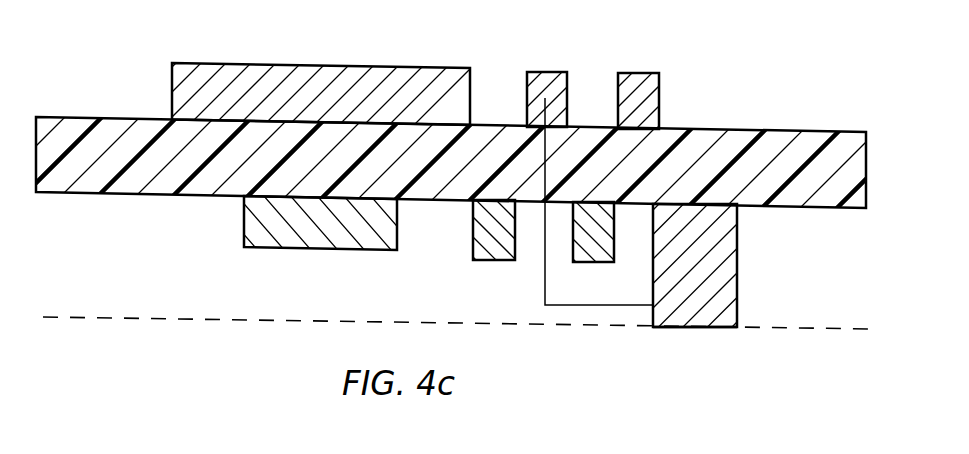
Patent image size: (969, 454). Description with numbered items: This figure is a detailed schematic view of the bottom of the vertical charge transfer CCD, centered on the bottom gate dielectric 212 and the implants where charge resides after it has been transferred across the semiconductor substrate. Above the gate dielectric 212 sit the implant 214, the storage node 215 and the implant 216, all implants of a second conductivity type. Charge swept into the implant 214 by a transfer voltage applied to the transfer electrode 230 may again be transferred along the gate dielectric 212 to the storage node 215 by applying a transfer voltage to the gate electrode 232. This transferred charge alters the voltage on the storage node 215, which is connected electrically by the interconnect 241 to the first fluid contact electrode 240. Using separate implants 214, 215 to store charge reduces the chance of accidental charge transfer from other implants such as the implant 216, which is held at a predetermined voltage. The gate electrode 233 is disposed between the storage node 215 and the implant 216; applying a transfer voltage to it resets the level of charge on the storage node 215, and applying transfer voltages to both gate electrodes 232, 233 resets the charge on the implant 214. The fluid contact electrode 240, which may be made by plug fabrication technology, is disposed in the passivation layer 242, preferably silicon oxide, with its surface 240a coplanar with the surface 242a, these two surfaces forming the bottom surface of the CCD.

The bottom gate dielectric 212 is at (737, 137).
The implant 214 is at (387, 70).
The storage node 215 is at (548, 76).
The implant 216 is at (655, 80).
The transfer electrode 230 is at (346, 251).
The gate electrode 232 is at (500, 258).
The gate electrode 233 is at (602, 258).
The first fluid contact electrode 240 is at (694, 312).
The surface of fluid contact electrode 240a is at (722, 330).
The interconnect 241 is at (598, 306).
The passivation layer 242 is at (812, 280).
The surface of passivation layer 242a is at (795, 333).